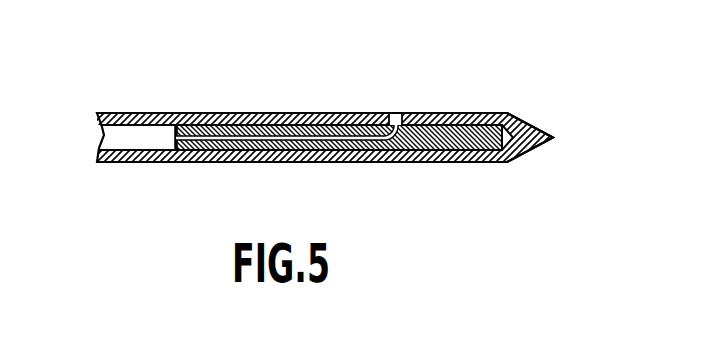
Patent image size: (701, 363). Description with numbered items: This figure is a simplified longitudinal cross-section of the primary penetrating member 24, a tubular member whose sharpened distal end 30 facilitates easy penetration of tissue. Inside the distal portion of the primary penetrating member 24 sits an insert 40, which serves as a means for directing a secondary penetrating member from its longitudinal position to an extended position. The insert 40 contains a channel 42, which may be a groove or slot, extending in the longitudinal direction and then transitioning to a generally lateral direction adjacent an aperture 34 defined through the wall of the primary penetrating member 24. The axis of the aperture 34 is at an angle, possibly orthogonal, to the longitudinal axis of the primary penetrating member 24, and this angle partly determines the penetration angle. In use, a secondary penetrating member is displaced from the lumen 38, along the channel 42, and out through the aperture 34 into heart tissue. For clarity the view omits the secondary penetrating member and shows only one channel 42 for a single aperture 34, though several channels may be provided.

The primary penetrating member 24 is at (193, 112).
The sharpened distal end 30 is at (520, 125).
The aperture 34 is at (393, 113).
The lumen 38 is at (143, 135).
The insert 40 is at (447, 142).
The channel 42 is at (297, 137).